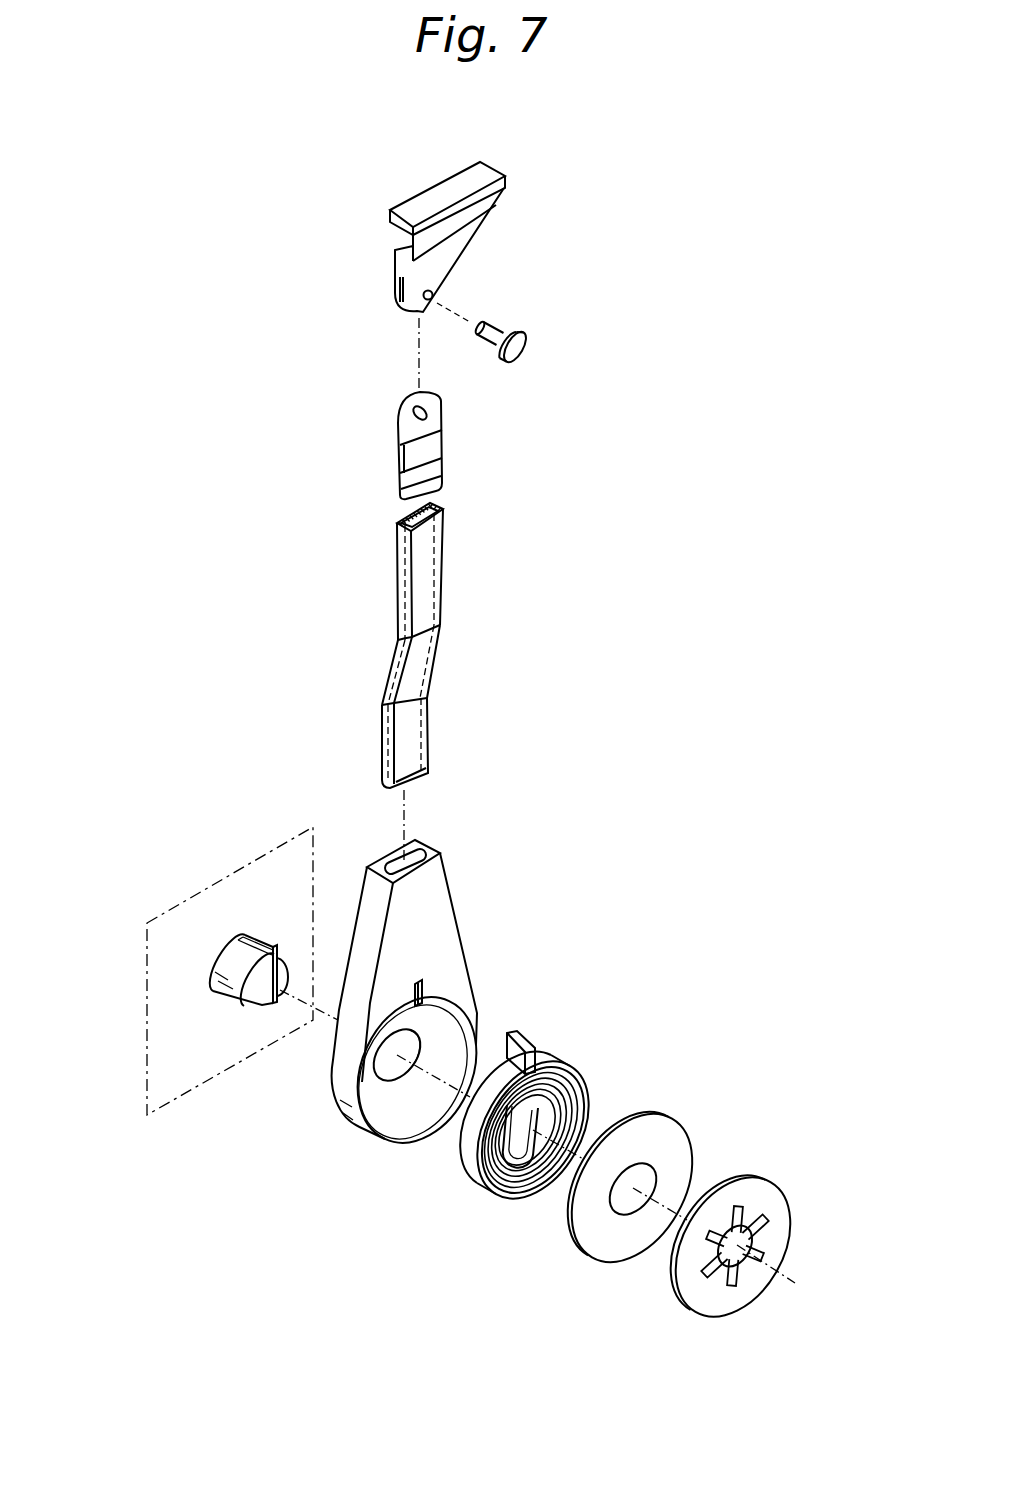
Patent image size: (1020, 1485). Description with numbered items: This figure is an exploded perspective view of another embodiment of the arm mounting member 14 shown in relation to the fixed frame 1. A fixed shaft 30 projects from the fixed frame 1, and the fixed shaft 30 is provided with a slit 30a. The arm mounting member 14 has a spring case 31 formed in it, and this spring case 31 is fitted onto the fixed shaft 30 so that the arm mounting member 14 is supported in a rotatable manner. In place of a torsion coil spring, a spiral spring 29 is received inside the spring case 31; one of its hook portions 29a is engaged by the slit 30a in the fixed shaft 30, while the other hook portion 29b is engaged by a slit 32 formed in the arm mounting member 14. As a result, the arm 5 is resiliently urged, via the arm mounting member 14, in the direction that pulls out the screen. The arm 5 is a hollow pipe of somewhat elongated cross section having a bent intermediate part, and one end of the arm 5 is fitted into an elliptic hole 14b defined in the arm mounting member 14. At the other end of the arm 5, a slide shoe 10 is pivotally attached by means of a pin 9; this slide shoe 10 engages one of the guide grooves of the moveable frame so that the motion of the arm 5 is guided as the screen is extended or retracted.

The fixed frame 1 is at (147, 1020).
The arm 5 is at (432, 651).
The pin 9 is at (497, 327).
The slide shoe 10 is at (437, 193).
The arm mounting member 14 is at (430, 1005).
The elliptic hole 14b is at (414, 856).
The spiral spring 29 is at (572, 1131).
The hook portion 29a is at (538, 1122).
The hook portion 29b is at (530, 1043).
The fixed shaft 30 is at (260, 964).
The slit 30a is at (273, 995).
The spring case 31 is at (386, 1112).
The slit 32 is at (420, 997).